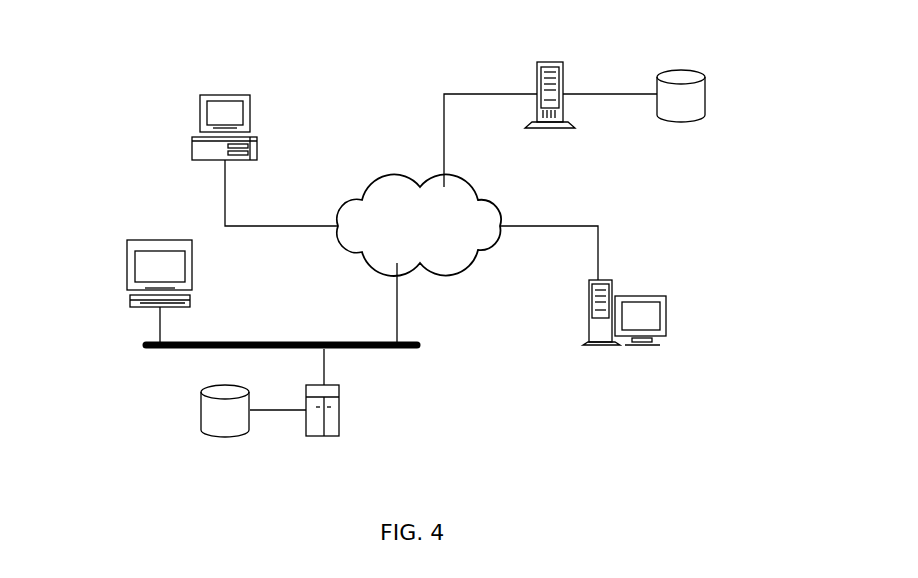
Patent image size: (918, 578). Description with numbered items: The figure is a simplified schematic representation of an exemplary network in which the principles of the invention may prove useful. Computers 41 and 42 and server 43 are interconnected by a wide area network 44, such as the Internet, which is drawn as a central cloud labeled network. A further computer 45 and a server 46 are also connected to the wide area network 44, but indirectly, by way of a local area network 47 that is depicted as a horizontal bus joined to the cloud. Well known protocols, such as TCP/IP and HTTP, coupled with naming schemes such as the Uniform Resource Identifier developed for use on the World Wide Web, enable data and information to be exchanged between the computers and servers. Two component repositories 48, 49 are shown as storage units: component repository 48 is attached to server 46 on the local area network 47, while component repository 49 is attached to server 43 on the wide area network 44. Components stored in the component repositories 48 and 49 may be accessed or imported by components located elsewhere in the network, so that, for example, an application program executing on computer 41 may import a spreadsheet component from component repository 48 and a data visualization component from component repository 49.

The computer 41 is at (225, 95).
The computer 42 is at (640, 296).
The server 43 is at (550, 62).
The wide area network 44 is at (397, 177).
The computer 45 is at (160, 240).
The server 46 is at (324, 436).
The local area network 47 is at (143, 346).
The component repository 48 is at (225, 437).
The component repository 49 is at (681, 122).